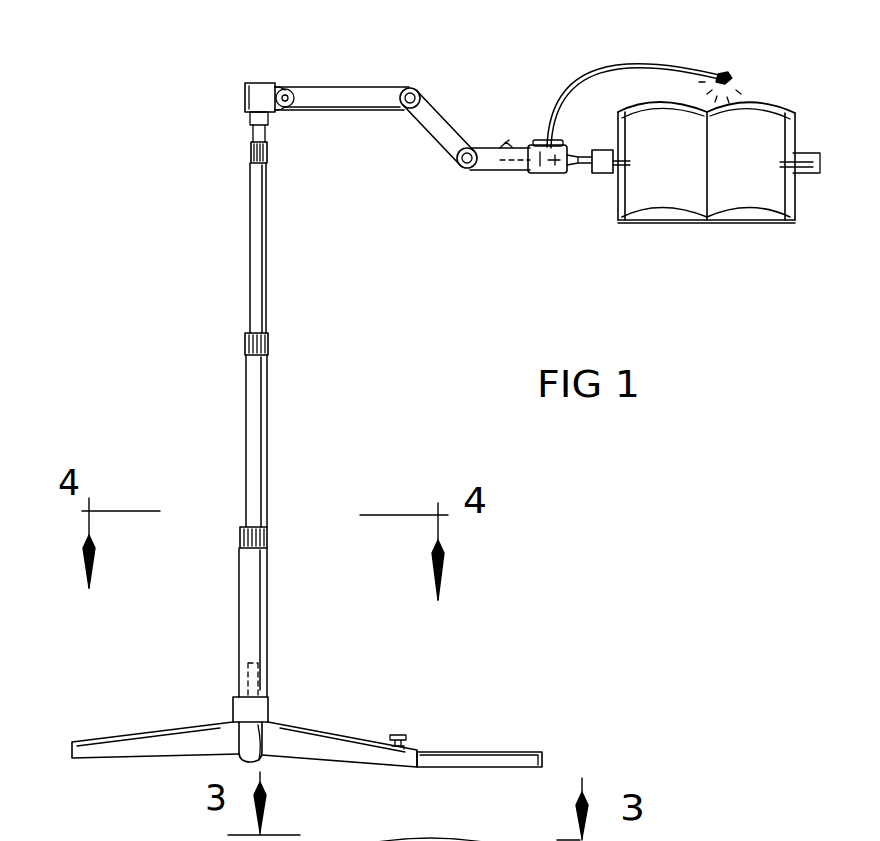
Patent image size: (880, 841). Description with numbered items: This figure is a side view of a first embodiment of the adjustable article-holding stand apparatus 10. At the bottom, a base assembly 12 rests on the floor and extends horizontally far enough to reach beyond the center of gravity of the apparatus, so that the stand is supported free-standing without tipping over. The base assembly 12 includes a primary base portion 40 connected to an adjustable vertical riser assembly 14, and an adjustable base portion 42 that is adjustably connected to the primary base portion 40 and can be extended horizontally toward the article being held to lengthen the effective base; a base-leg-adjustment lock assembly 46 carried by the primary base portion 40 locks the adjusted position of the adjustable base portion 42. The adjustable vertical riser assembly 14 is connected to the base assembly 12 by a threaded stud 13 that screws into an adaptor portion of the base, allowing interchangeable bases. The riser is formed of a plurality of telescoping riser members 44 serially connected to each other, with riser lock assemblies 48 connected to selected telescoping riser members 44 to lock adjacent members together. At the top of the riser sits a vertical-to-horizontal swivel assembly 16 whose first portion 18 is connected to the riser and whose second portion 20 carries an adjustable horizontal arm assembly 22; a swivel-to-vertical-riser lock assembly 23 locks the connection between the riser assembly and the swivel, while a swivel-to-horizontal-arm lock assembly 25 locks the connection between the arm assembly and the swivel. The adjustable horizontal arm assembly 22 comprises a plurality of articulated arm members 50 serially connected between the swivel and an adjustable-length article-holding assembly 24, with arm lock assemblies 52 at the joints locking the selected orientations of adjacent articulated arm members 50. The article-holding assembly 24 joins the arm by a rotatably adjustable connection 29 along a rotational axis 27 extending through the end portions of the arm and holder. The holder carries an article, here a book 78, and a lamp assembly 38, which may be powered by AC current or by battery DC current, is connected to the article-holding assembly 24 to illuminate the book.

The adjustable article-holding stand apparatus 10 is at (210, 272).
The base assembly 12 is at (205, 722).
The threaded stud 13 is at (245, 685).
The adjustable vertical riser assembly 14 is at (243, 417).
The vertical-to-horizontal swivel assembly 16 is at (238, 78).
The first portion 18 is at (252, 137).
The second portion 20 is at (280, 90).
The adjustable horizontal arm assembly 22 is at (433, 160).
The swivel-to-vertical-riser lock assembly 23 is at (250, 160).
The adjustable-length article-holding assembly 24 is at (602, 177).
The swivel-to-horizontal-arm lock assembly 25 is at (290, 103).
The rotational axis 27 is at (552, 175).
The rotatably adjustable connection 29 is at (527, 182).
The lamp assembly 38 is at (592, 75).
The primary base portion 40 is at (205, 743).
The adjustable base portion 42 is at (487, 757).
The telescoping riser members 44 is at (258, 262).
The base-leg-adjustment lock assembly 46 is at (400, 735).
The riser lock assemblies 48 is at (247, 348).
The articulated arm members 50 is at (355, 90).
The arm lock assemblies 52 is at (415, 88).
The book 78 is at (725, 188).